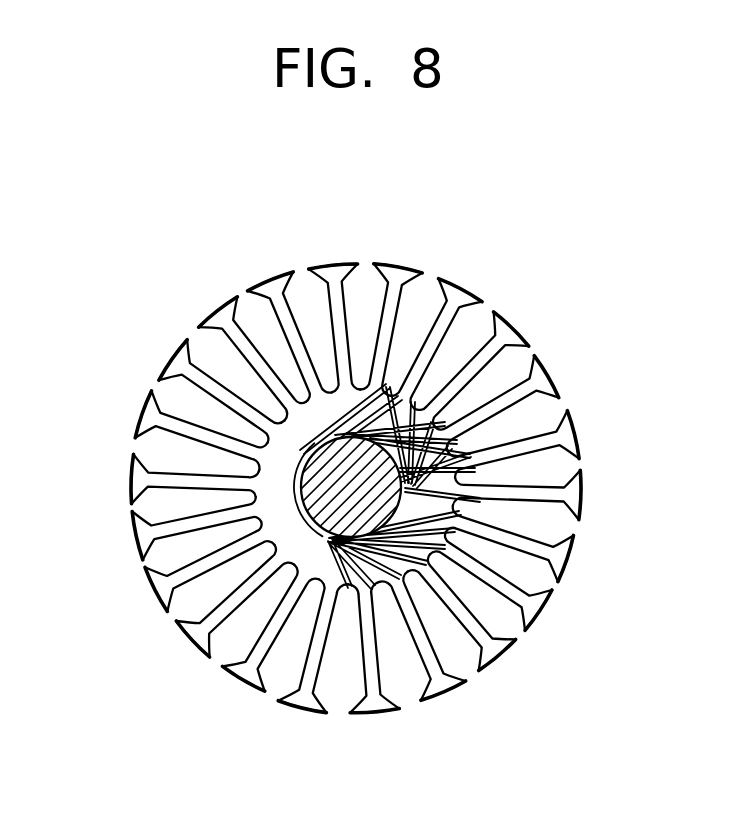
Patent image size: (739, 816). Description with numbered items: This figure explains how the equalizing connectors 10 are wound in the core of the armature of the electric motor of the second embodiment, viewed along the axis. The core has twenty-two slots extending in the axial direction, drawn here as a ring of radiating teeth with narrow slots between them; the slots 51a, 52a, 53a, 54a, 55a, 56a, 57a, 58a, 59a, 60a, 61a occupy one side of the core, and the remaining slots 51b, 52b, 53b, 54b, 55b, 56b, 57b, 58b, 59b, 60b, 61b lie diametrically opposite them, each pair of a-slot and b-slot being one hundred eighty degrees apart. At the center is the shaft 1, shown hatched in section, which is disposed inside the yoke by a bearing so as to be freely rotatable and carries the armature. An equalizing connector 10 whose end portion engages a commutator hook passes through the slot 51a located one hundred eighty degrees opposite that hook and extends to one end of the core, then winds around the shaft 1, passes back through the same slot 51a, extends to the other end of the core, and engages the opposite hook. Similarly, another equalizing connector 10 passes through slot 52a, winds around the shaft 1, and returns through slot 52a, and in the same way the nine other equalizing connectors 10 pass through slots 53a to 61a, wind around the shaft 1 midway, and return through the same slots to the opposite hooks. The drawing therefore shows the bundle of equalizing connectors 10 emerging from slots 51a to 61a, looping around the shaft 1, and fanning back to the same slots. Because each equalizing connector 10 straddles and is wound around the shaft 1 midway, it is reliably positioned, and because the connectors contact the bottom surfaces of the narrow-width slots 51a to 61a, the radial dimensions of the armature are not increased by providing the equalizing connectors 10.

The shaft 1 is at (302, 510).
The equalizing connector 10 is at (360, 402).
The slot 51a is at (345, 663).
The slot 52a is at (400, 688).
The slot 53a is at (462, 658).
The slot 54a is at (510, 628).
The slot 55a is at (538, 590).
The slot 56a is at (552, 530).
The slot 57a is at (568, 468).
The slot 58a is at (563, 424).
The slot 59a is at (520, 370).
The slot 60a is at (482, 318).
The slot 61a is at (430, 284).
The tooth 51b is at (368, 282).
The tooth 52b is at (303, 288).
The tooth 53b is at (252, 307).
The tooth 54b is at (205, 342).
The tooth 55b is at (170, 388).
The tooth 56b is at (130, 442).
The tooth 57b is at (125, 498).
The tooth 58b is at (138, 560).
The tooth 59b is at (162, 612).
The tooth 60b is at (203, 655).
The tooth 61b is at (278, 668).